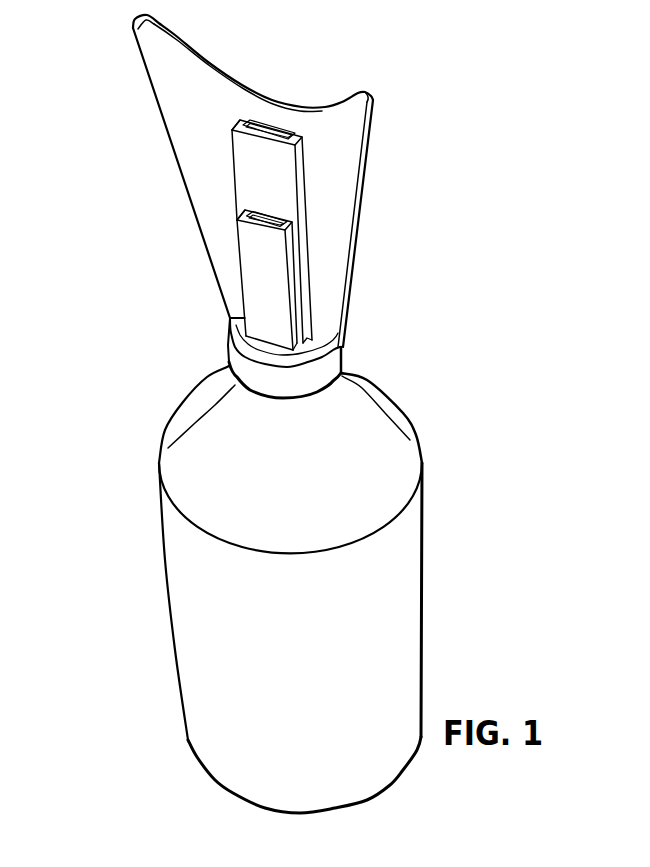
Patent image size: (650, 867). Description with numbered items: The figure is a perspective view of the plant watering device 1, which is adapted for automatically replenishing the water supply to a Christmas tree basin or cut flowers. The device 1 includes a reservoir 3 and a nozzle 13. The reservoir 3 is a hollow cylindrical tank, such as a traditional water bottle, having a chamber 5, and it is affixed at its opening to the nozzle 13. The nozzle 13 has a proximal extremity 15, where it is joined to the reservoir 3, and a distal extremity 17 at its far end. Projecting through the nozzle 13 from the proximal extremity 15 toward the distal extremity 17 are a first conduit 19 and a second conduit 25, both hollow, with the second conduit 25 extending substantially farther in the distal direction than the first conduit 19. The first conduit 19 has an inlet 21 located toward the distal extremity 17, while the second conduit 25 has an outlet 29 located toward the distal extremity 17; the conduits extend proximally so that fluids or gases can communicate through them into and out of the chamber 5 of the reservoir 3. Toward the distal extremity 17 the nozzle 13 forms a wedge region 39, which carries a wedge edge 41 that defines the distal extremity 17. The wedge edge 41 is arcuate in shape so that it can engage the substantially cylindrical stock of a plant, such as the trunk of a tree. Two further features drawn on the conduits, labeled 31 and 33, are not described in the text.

The plant watering device 1 is at (457, 327).
The reservoir 3 is at (313, 589).
The chamber 5 is at (310, 508).
The nozzle 13 is at (357, 243).
The proximal extremity 15 is at (342, 372).
The distal extremity 17 is at (133, 23).
The first conduit 19 is at (258, 268).
The inlet 21 is at (238, 217).
The second conduit 25 is at (257, 165).
The outlet 29 is at (235, 124).
The base of lower block 31 is at (260, 342).
The slot 33 is at (293, 131).
The wedge region 39 is at (182, 135).
The wedge edge 41 is at (265, 98).